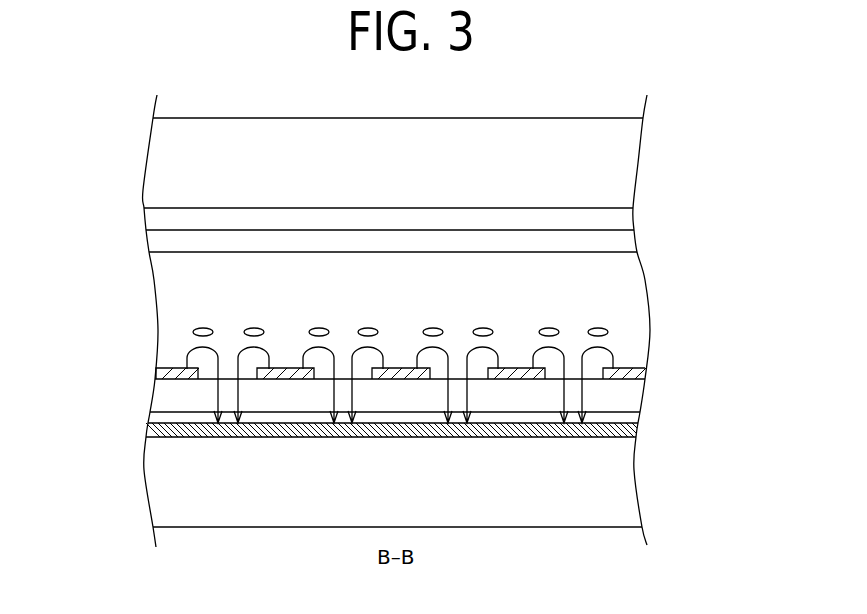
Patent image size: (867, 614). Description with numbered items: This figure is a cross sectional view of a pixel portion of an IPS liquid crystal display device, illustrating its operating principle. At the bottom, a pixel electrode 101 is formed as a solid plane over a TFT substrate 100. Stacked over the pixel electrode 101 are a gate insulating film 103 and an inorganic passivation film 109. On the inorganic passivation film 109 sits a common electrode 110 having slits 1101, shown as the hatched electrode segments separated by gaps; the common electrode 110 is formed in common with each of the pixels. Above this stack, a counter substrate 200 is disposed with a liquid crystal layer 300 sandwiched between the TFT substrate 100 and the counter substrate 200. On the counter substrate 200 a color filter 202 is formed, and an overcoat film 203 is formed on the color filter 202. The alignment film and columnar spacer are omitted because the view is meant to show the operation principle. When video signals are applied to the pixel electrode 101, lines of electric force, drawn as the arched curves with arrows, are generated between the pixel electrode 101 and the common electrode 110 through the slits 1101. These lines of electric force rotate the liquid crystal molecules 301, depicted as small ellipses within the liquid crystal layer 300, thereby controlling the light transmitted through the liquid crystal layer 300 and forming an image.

The TFT substrate 100 is at (620, 491).
The pixel electrode 101 is at (630, 430).
The gate insulating film 103 is at (620, 418).
The inorganic passivation film 109 is at (620, 397).
The common electrode 110 is at (630, 370).
The slits 1101 is at (228, 376).
The counter substrate 200 is at (612, 163).
The color filter 202 is at (614, 218).
The overcoat film 203 is at (614, 240).
The liquid crystal layer 300 is at (612, 293).
The liquid crystal molecules 301 is at (193, 332).